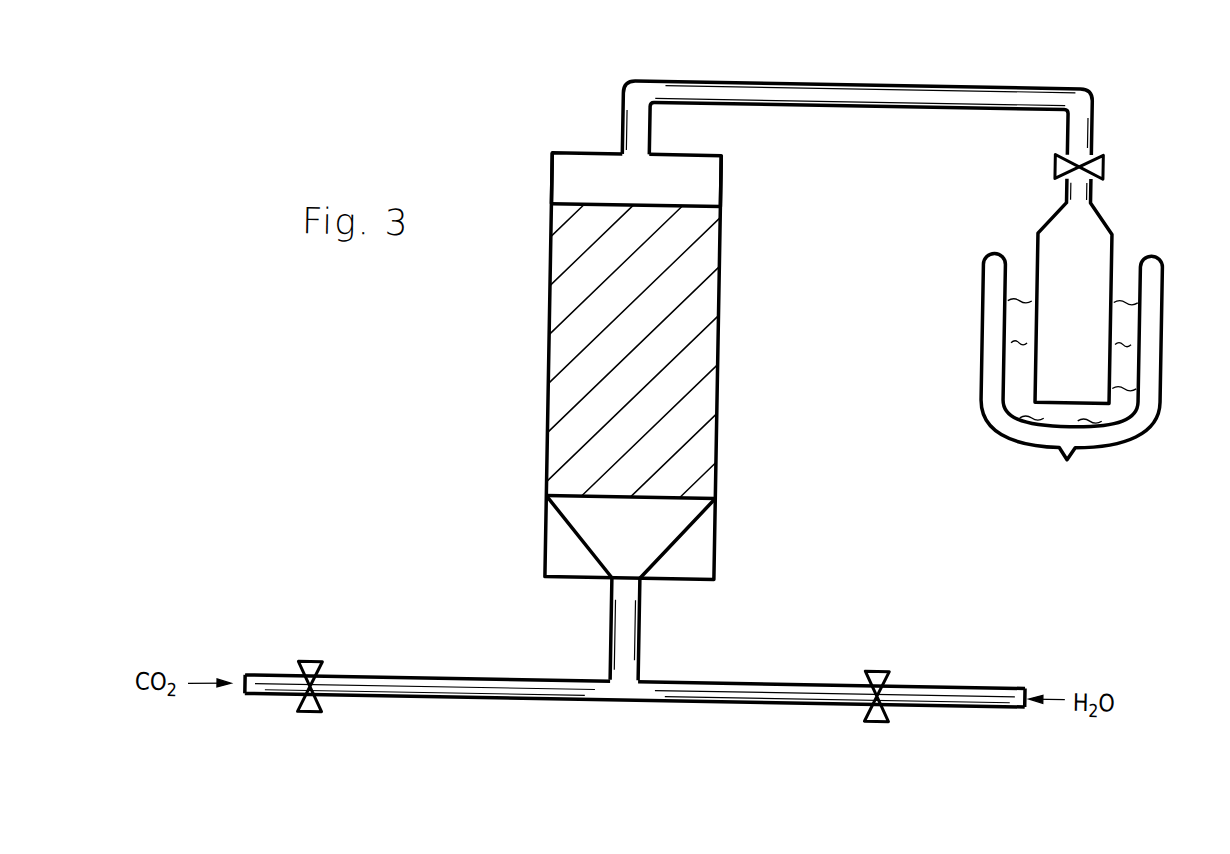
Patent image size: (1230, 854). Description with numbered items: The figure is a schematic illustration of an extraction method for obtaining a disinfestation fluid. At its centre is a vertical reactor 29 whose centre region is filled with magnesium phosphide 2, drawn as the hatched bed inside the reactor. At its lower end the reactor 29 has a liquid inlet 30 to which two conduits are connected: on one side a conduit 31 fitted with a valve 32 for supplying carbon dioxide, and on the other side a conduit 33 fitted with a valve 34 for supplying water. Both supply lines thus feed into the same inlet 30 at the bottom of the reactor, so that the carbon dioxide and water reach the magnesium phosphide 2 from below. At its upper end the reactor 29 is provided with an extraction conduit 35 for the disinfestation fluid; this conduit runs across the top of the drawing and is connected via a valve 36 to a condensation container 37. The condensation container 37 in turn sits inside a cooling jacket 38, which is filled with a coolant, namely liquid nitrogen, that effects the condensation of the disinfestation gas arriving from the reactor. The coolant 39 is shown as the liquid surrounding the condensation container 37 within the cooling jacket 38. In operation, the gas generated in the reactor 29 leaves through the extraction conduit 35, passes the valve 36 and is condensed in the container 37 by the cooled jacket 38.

The magnesium phosphide 2 is at (569, 356).
The vertical reactor 29 is at (549, 206).
The liquid inlet 30 is at (635, 580).
The conduit 31 is at (476, 693).
The valve 32 is at (316, 717).
The conduit 33 is at (776, 687).
The valve 34 is at (876, 711).
The extraction conduit 35 is at (837, 94).
The valve 36 is at (1096, 154).
The condensation container 37 is at (1095, 235).
The cooling jacket 38 is at (1146, 314).
The cooling liquid 39 is at (1123, 393).